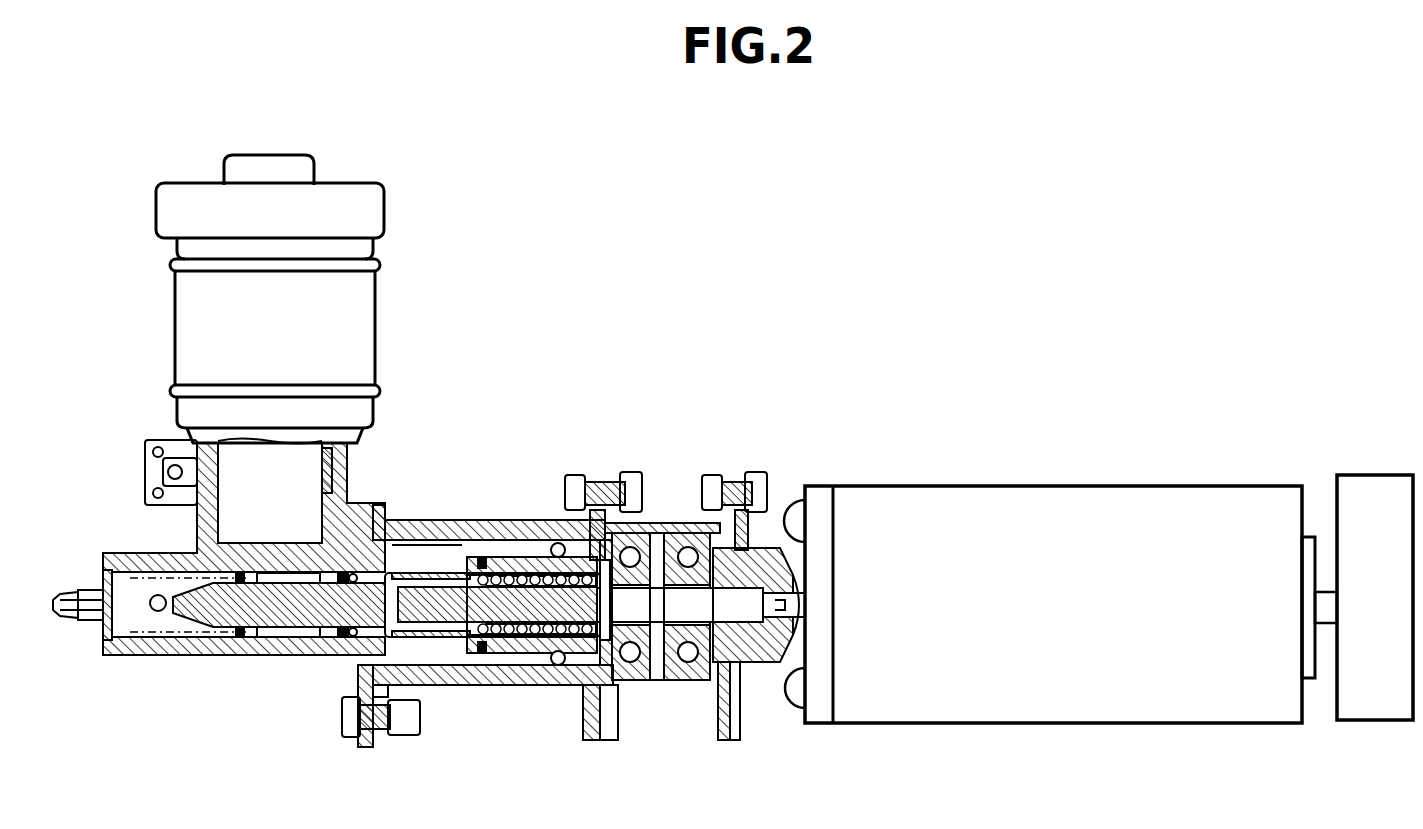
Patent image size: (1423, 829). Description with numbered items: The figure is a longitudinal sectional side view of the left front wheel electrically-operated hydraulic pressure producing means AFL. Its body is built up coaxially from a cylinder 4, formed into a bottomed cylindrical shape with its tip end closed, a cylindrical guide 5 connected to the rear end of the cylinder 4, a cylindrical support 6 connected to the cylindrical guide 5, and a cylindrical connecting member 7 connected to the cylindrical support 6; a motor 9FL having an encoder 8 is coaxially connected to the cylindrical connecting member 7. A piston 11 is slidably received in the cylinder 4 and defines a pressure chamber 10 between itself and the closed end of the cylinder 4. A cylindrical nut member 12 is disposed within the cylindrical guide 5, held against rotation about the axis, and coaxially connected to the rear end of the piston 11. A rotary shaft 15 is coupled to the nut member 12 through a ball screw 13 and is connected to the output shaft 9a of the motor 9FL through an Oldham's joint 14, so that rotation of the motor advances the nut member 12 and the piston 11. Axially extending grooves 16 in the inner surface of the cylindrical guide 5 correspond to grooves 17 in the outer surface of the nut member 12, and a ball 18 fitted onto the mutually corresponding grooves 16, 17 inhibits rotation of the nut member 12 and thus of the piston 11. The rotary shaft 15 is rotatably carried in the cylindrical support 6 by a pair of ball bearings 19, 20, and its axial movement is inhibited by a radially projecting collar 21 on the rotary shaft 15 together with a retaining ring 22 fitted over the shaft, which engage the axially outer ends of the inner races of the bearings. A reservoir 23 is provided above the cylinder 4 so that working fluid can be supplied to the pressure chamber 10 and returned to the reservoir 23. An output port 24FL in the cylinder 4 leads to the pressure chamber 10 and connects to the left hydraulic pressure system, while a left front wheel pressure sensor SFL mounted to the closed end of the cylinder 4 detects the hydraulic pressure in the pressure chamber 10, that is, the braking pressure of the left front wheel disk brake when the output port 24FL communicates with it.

The cylinder 4 is at (305, 655).
The cylindrical guide 5 is at (480, 520).
The cylindrical support 6 is at (662, 527).
The cylindrical connecting member 7 is at (773, 530).
The encoder 8 is at (1360, 478).
The motor 9FL is at (1073, 621).
The output shaft 9a is at (793, 585).
The pressure chamber 10 is at (160, 622).
The piston 11 is at (343, 578).
The cylindrical nut member 12 is at (518, 560).
The ball screw 13 is at (520, 640).
The Oldham's joint 14 is at (790, 647).
The rotary shaft 15 is at (441, 605).
The axially extending grooves 16 is at (438, 553).
The axially extending grooves 17 is at (495, 640).
The ball 18 is at (556, 665).
The ball bearing 19 is at (631, 663).
The ball bearing 20 is at (688, 663).
The collar 21 is at (580, 475).
The retaining ring 22 is at (738, 660).
The reservoir 23 is at (360, 310).
The output port 24FL is at (155, 597).
The electrically-operated hydraulic pressure producing means AFL is at (736, 450).
The pressure sensor SFL is at (93, 622).